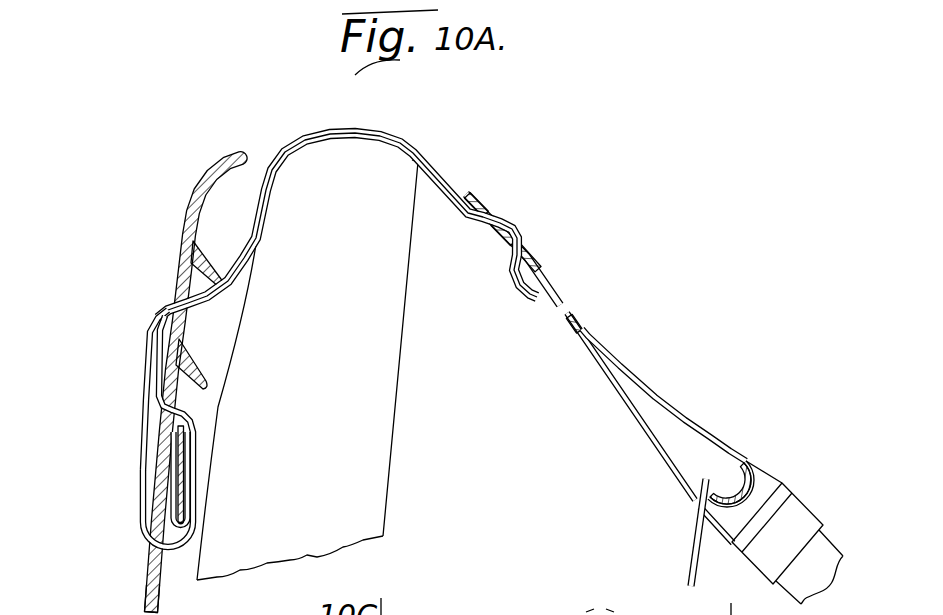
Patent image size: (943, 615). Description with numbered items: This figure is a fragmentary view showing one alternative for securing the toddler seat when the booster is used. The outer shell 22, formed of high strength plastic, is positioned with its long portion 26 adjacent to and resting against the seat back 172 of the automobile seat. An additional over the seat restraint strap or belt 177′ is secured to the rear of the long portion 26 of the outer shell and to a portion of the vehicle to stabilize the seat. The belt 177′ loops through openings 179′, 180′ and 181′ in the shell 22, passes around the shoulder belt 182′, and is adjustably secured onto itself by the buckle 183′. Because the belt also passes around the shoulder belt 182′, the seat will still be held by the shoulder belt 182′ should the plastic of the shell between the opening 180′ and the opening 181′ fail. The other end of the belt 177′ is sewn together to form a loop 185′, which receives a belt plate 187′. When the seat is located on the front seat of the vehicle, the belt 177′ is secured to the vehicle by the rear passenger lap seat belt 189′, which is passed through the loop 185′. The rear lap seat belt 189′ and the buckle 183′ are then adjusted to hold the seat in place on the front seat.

The outer shell 22 is at (206, 158).
The long portion 26 is at (147, 593).
The seat back 172 is at (373, 433).
The over the seat restraint strap or belt 177′ is at (454, 174).
The opening 179′ is at (180, 300).
The opening 180′ is at (173, 408).
The opening 181′ is at (146, 553).
The shoulder belt 182′ is at (180, 474).
The buckle 183′ is at (534, 260).
The loop 185′ is at (657, 397).
The belt plate 187′ is at (688, 537).
The rear passenger lap seat belt 189′ is at (744, 463).